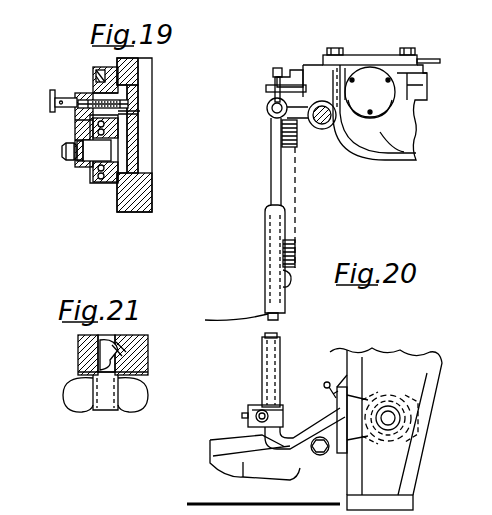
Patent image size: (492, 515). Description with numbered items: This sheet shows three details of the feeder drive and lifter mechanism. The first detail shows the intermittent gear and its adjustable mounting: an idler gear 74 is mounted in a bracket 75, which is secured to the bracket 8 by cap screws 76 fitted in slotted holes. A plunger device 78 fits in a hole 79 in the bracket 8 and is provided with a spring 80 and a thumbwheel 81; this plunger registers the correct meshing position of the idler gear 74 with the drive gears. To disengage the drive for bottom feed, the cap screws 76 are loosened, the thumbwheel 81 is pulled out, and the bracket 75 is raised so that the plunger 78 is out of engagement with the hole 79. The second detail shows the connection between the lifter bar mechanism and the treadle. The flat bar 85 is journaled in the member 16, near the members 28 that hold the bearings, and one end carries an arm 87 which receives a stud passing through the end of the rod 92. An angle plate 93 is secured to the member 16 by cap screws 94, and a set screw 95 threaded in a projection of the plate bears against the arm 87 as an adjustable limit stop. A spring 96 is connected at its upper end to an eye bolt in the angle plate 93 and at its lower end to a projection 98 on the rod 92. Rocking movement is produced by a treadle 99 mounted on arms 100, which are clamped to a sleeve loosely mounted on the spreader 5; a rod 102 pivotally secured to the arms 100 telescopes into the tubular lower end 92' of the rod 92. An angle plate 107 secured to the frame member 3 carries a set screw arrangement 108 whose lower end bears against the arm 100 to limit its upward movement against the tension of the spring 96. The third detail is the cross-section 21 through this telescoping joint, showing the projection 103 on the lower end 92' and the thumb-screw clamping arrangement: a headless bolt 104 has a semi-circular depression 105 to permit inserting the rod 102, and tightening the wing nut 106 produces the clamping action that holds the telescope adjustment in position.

In FIG. 19, the bracket 8 is at (143, 68).
In FIG. 19, the idler gear 74 is at (100, 182).
In FIG. 19, the bracket 75 is at (77, 123).
In FIG. 19, the cap screws 76 is at (97, 75).
In FIG. 19, the plunger device 78 is at (120, 115).
In FIG. 19, the hole 79 is at (137, 103).
In FIG. 19, the spring 80 is at (88, 97).
In FIG. 19, the thumbwheel 81 is at (51, 100).
In FIG. 20, the member 16 is at (385, 160).
In FIG. 20, the members 28 is at (370, 68).
In FIG. 20, the flat bar 85 is at (339, 128).
In FIG. 20, the arm 87 is at (282, 125).
In FIG. 20, the rod 92 is at (260, 161).
In FIG. 20, the tubular lower end 92' is at (292, 362).
In FIG. 20, the angle plate 93 is at (266, 88).
In FIG. 20, the cap screws 94 is at (292, 70).
In FIG. 20, the set screw 95 is at (275, 70).
In FIG. 20, the spring 96 is at (290, 243).
In FIG. 20, the projection 98 is at (283, 293).
In FIG. 20, the treadle 99 is at (212, 447).
In FIG. 20, the arms 100 is at (235, 470).
In FIG. 20, the rod 102 is at (295, 472).
In FIG. 21, the rod 102 is at (133, 338).
In FIG. 20, the projection 103 is at (258, 405).
In FIG. 21, the projection 103 is at (148, 358).
In FIG. 20, the headless bolt 104 is at (250, 425).
In FIG. 21, the headless bolt 104 is at (98, 355).
In FIG. 21, the semi-circular depression 105 is at (78, 340).
In FIG. 20, the wing nut 106 is at (250, 408).
In FIG. 21, the wing nut 106 is at (77, 408).
In FIG. 20, the angle plate 107 is at (343, 375).
In FIG. 20, the set screw arrangement 108 is at (325, 384).
In FIG. 20, the side frame 3 is at (415, 362).
In FIG. 20, the spreader 5 is at (412, 412).
In FIG. 20, the section line 21 is at (213, 407).